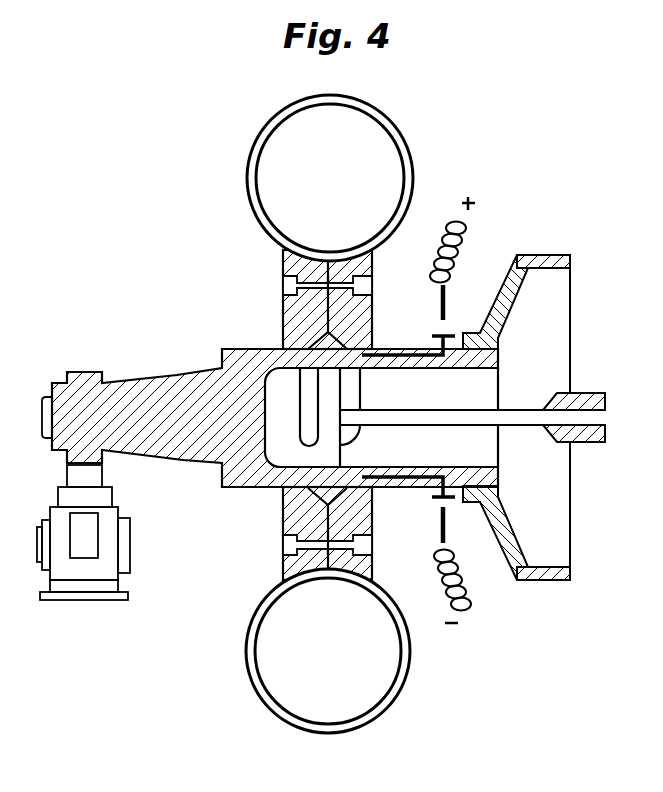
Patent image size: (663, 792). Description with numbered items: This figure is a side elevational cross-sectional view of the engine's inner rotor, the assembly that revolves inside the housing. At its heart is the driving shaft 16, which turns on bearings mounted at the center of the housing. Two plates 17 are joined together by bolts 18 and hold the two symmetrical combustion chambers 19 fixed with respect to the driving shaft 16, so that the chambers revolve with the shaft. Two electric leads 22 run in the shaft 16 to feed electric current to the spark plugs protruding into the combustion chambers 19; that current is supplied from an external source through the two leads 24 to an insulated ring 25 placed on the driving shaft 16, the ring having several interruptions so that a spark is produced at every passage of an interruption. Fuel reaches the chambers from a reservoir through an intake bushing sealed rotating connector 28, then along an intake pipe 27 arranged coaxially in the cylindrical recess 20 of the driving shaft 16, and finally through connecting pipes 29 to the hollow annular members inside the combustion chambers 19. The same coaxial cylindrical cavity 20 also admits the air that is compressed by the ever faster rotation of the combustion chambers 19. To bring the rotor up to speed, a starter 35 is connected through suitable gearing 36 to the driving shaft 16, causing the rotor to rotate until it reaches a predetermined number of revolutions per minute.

The driving shaft 16 is at (140, 408).
The plates 17 is at (300, 323).
The bolts 18 is at (365, 283).
The combustion chambers 19 is at (275, 173).
The cylindrical recess 20 is at (486, 380).
The electric leads 22 is at (404, 353).
The leads 24 is at (462, 223).
The insulated ring 25 is at (446, 297).
The intake pipe 27 is at (510, 420).
The intake bushing sealed rotating connector 28 is at (590, 392).
The connecting pipes 29 is at (328, 445).
The starter 35 is at (110, 548).
The gearing 36 is at (95, 479).